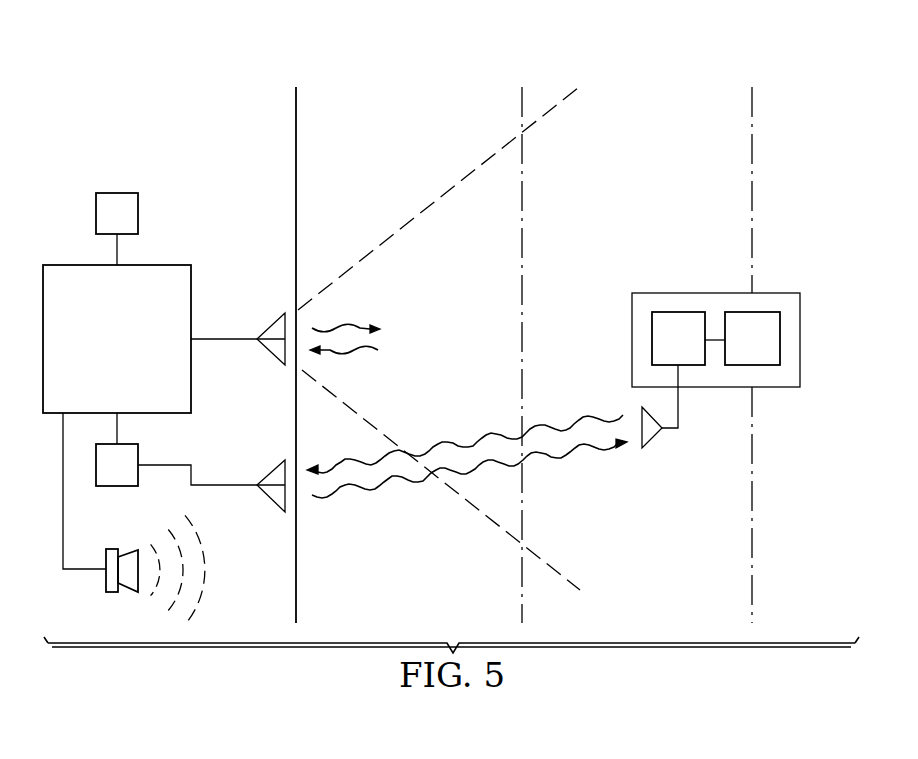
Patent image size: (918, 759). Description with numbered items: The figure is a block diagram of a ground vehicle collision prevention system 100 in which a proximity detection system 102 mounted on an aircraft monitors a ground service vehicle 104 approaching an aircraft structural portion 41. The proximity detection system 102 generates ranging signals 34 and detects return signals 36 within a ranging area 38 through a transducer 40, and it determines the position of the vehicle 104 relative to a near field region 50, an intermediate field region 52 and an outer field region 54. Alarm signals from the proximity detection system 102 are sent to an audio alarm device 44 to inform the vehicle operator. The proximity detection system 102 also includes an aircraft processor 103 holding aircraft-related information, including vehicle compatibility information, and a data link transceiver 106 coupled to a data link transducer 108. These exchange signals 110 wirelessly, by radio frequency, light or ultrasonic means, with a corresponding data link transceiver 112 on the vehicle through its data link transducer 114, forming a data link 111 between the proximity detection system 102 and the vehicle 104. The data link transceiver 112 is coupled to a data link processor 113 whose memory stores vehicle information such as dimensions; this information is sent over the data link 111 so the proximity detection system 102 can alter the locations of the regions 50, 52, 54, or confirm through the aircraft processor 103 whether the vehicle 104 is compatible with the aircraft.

The ground vehicle collision prevention system 100 is at (168, 96).
The aircraft structural portion 41 is at (296, 120).
The aircraft processor 103 is at (105, 192).
The proximity detection system 102 is at (98, 353).
The transducer 40 is at (272, 323).
The data link transducer 108 is at (272, 470).
The data link transceiver 106 is at (106, 487).
The audio alarm device 44 is at (105, 580).
The ranging area 38 is at (482, 165).
The near field region 50 is at (459, 216).
The intermediate field region 52 is at (618, 218).
The outer field region 54 is at (775, 218).
The ranging signals 34 is at (342, 335).
The return signals 36 is at (358, 357).
The data link 111 is at (440, 418).
The signals 110 is at (577, 420).
The ground service vehicle 104 is at (806, 354).
The data link transceiver 112 is at (690, 313).
The data link processor 113 is at (780, 330).
The data link transducer 114 is at (650, 440).